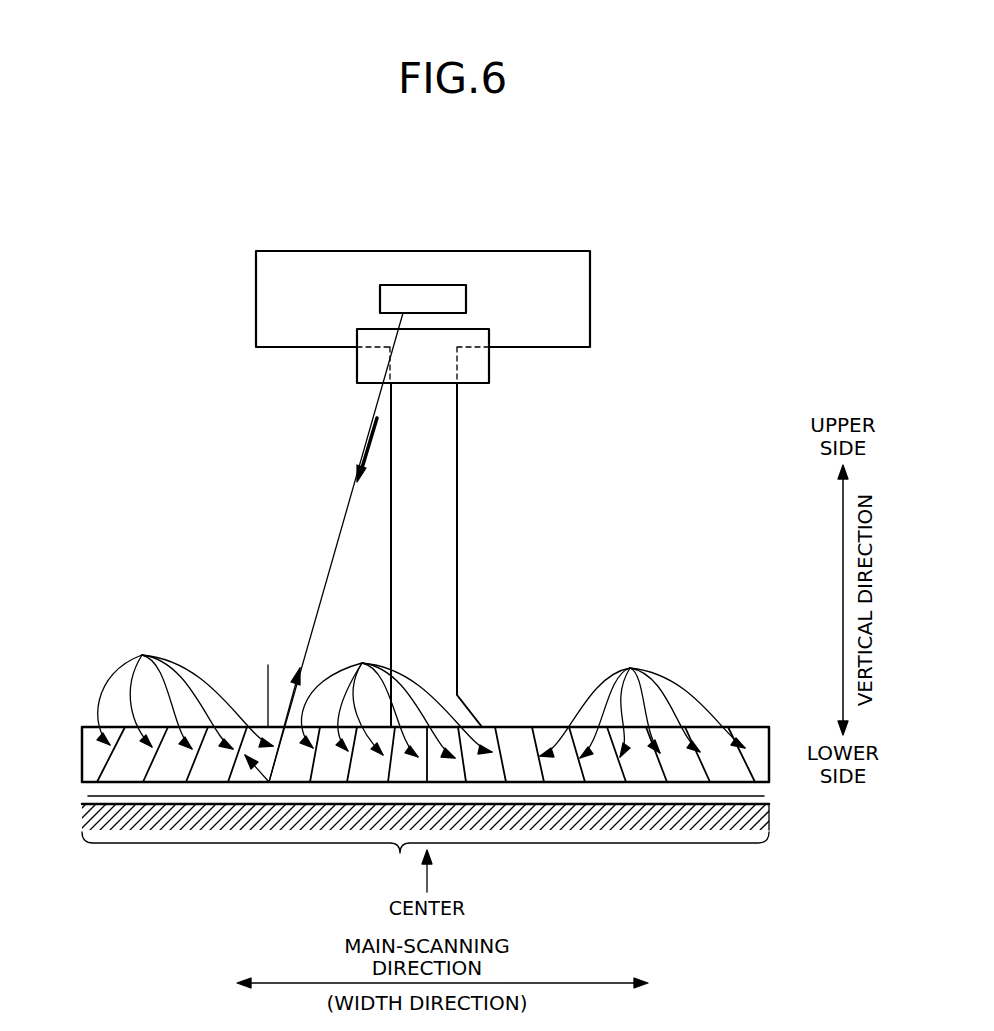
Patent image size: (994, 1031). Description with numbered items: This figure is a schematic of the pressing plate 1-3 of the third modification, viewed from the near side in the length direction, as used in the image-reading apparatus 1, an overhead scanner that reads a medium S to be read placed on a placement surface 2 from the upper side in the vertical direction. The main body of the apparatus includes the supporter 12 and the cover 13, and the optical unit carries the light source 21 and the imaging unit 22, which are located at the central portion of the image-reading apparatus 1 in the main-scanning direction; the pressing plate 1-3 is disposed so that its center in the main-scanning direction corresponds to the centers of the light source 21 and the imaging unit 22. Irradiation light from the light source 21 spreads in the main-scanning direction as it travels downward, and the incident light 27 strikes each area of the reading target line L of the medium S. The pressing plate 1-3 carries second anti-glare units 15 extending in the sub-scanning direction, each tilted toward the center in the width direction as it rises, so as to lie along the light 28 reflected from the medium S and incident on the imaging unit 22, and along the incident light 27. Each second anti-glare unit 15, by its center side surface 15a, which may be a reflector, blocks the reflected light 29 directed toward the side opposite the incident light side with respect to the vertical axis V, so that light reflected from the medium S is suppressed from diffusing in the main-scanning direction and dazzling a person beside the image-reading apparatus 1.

The image-reading apparatus 1 is at (553, 203).
The cover 13 is at (546, 251).
The imaging unit 22 is at (468, 298).
The light source 21 is at (490, 372).
The supporter 12 is at (458, 505).
The incident light 27 is at (366, 457).
The light incident on the imaging unit 28 is at (288, 707).
The reflected light 29 is at (257, 778).
The second anti-glare unit 15 is at (421, 695).
The center side surface 15a is at (165, 758).
The pressing plate 1-3 is at (438, 771).
The placement surface 2 is at (83, 803).
The medium to be read S is at (764, 797).
The vertical axis V is at (267, 682).
The reading target line L is at (425, 858).